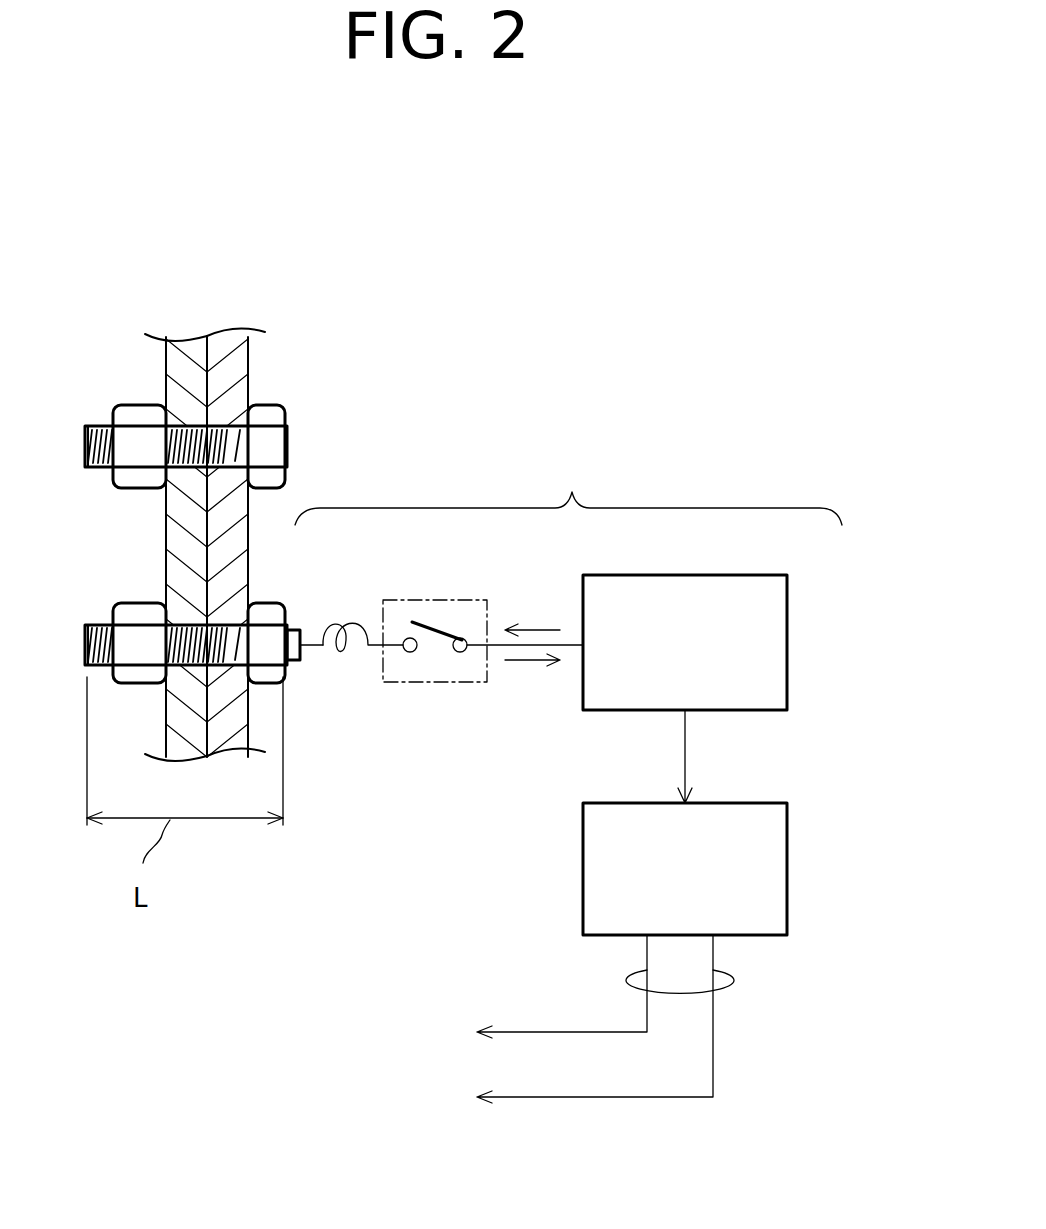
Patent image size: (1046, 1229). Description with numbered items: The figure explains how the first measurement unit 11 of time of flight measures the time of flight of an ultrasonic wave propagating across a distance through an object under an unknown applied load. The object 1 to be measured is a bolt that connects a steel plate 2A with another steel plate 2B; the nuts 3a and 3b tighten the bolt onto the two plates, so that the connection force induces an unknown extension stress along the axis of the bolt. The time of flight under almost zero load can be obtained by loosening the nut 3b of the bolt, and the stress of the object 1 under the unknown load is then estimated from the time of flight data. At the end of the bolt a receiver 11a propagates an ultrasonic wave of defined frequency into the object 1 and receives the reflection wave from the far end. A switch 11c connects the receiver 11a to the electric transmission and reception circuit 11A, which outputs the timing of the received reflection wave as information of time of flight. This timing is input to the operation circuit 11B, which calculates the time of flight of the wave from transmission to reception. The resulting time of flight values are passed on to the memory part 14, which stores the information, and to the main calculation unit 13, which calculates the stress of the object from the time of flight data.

The object 1 is at (250, 407).
The steel plate 2A is at (235, 368).
The steel plate 2B is at (165, 372).
The nut 3a is at (137, 413).
The nut 3b is at (127, 680).
The measurement unit of time of flight 11 is at (625, 508).
The receiver 11a is at (295, 662).
The switch 11c is at (437, 600).
The electric transmission and reception circuit 11A is at (787, 620).
The operation circuit 11B is at (787, 845).
The main calculation unit 13 is at (412, 1023).
The memory part 14 is at (405, 989).